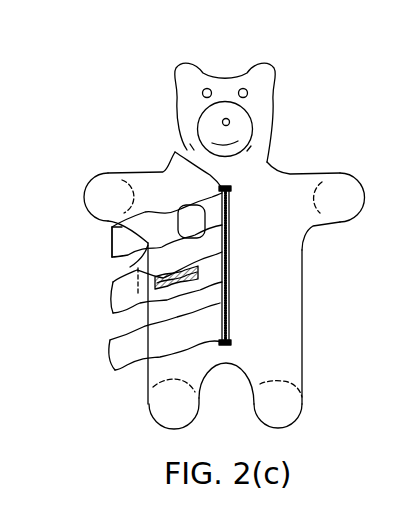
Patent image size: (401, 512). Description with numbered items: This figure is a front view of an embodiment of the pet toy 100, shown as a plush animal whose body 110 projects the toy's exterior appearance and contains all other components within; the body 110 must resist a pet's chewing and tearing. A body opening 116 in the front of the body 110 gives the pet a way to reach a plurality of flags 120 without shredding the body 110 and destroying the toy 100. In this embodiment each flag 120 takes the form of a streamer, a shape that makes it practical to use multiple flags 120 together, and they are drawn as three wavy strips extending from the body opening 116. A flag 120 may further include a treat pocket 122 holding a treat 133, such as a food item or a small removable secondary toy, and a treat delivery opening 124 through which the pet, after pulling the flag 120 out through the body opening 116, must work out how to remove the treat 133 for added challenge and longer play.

The pet toy 100 is at (307, 47).
The body 110 is at (285, 353).
The body opening 116 is at (175, 152).
The flag 120 is at (113, 229).
The treat pocket 122 is at (162, 287).
The treat delivery opening 124 is at (122, 261).
The treat 133 is at (197, 217).